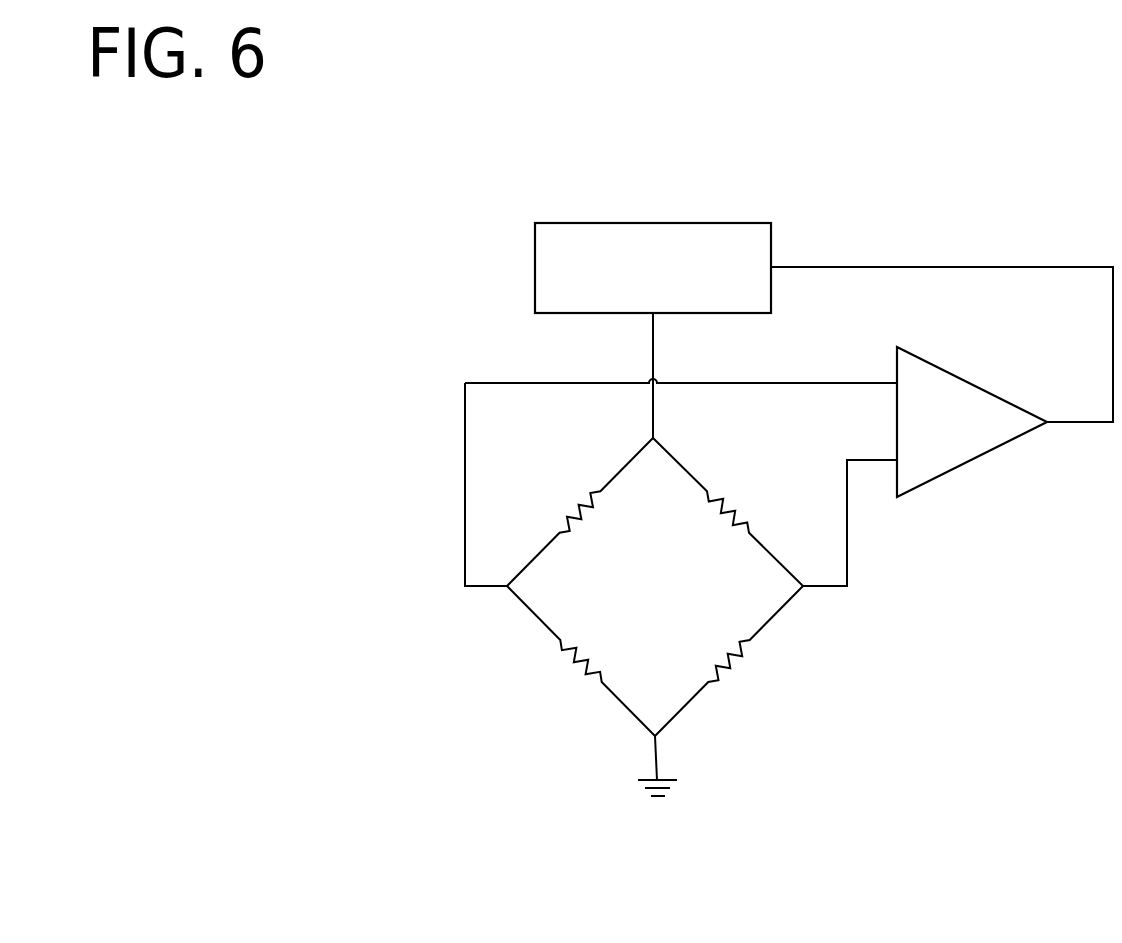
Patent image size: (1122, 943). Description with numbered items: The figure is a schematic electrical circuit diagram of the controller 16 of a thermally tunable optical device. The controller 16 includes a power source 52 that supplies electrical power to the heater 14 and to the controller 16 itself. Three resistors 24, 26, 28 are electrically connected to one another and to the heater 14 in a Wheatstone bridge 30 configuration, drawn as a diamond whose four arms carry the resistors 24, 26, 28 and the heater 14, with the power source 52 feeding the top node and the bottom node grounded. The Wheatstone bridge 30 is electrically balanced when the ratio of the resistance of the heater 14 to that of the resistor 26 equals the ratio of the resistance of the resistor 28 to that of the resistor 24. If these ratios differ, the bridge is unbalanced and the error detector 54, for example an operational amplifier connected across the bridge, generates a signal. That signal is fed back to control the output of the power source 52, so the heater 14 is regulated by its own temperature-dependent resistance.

The heater 14 is at (732, 661).
The controller 16 is at (367, 217).
The resistor 24 is at (562, 522).
The resistor 26 is at (748, 518).
The resistor 28 is at (598, 675).
The Wheatstone bridge 30 is at (660, 660).
The power source 52 is at (535, 270).
The error detector 54 is at (952, 470).